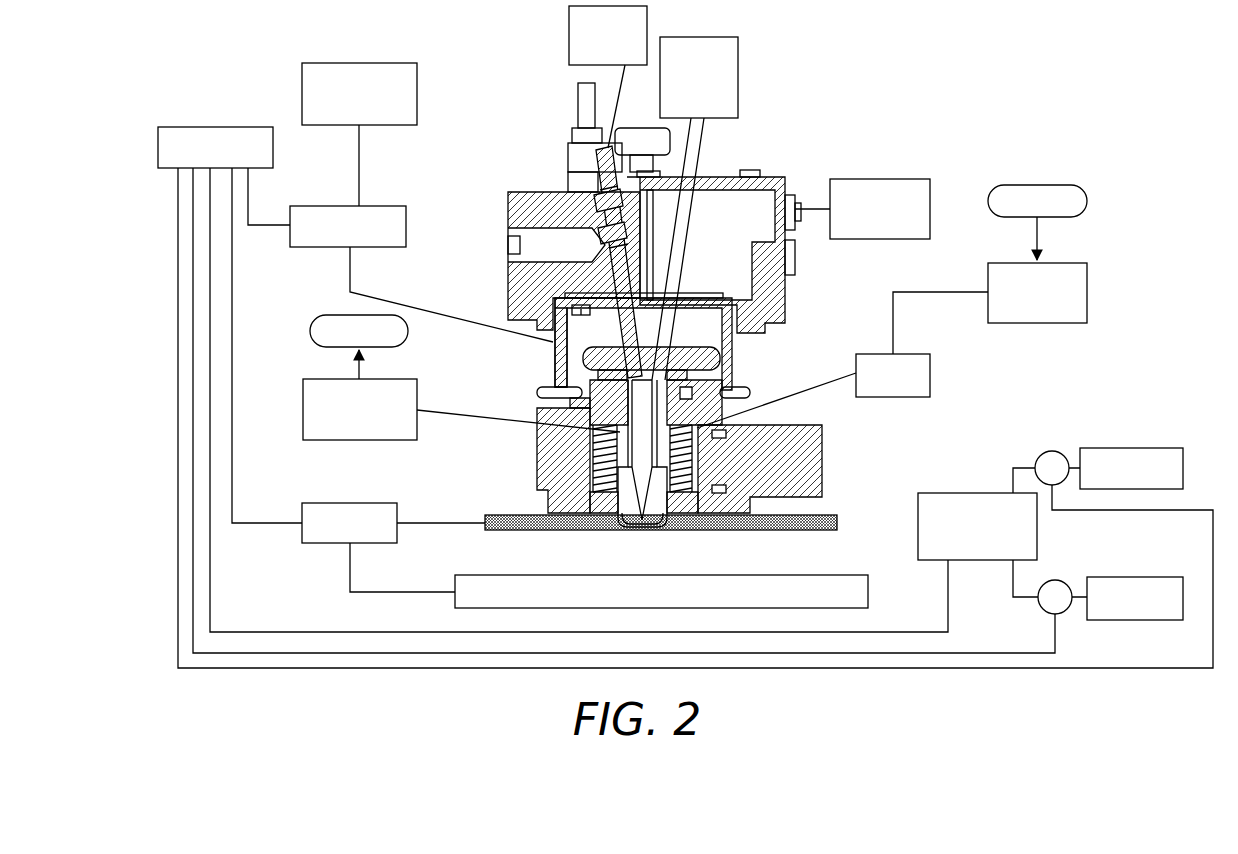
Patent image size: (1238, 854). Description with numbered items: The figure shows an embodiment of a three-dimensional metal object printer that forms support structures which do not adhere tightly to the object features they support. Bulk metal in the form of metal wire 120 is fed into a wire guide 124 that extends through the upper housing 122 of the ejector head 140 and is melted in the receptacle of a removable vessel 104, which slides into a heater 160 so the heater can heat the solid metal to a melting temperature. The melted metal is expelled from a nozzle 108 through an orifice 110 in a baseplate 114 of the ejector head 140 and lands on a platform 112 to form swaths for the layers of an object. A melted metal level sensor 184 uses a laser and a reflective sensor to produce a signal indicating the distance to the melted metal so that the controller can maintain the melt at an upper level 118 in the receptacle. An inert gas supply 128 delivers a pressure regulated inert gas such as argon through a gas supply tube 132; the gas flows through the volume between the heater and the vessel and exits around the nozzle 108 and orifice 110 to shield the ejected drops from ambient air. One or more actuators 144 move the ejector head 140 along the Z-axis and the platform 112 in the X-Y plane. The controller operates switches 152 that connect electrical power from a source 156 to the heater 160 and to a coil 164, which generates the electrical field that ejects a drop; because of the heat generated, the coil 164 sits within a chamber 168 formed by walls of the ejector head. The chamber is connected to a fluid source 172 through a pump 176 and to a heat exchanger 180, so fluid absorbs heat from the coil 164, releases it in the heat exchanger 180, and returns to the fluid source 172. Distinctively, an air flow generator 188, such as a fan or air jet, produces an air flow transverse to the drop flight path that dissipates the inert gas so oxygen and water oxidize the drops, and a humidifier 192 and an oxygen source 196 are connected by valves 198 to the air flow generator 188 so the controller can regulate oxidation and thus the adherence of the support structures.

The removable vessel 104 is at (640, 446).
The nozzle 108 is at (648, 527).
The orifice 110 is at (617, 527).
The platform 112 is at (833, 575).
The baseplate 114 is at (823, 517).
The upper level 118 is at (569, 36).
The metal wire 120 is at (640, 405).
The upper housing 122 is at (530, 195).
The wire guide 124 is at (557, 312).
The inert gas supply 128 is at (880, 179).
The gas supply tube 132 is at (810, 208).
The ejector head 140 is at (455, 305).
The actuators 144 is at (380, 543).
The switches 152 is at (406, 226).
The electrical power source 156 is at (302, 92).
The heater 160 is at (668, 428).
The coil 164 is at (703, 462).
The chamber 168 is at (600, 438).
The fluid source 172 is at (1038, 323).
The pump 176 is at (930, 377).
The heat exchanger 180 is at (360, 440).
The melted metal level sensor 184 is at (740, 73).
The air flow generator 188 is at (967, 493).
The humidifier 192 is at (1133, 448).
The oxygen source 196 is at (1148, 577).
The valves 198 is at (1047, 452).